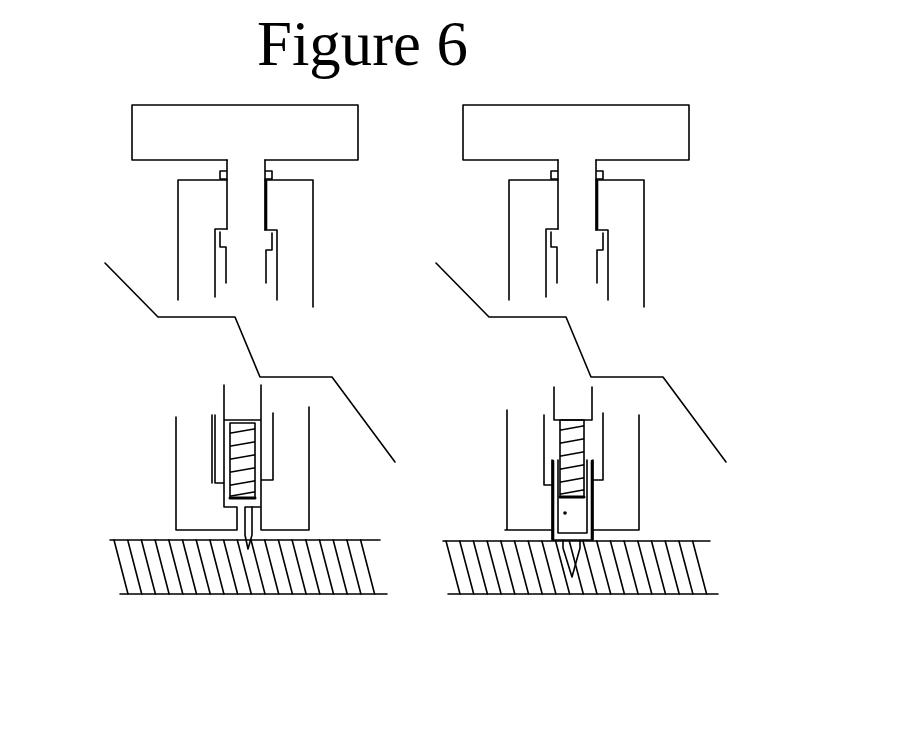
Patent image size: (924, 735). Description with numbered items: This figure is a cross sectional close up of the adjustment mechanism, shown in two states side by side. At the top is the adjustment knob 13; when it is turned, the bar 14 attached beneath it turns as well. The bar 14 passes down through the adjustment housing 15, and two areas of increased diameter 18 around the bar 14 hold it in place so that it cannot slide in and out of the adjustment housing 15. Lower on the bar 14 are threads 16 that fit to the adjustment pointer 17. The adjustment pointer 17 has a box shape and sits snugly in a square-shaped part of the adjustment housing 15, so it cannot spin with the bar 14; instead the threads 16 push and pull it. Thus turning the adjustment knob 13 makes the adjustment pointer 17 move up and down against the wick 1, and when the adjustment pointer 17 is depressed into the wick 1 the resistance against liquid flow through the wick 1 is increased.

The wick 1 is at (302, 595).
The adjustment knob 13 is at (162, 123).
The bar 14 is at (243, 210).
The adjustment housing 15 is at (617, 190).
The threads 16 is at (240, 440).
The adjustment pointer 17 is at (225, 523).
The areas of increased diameter 18 is at (268, 245).